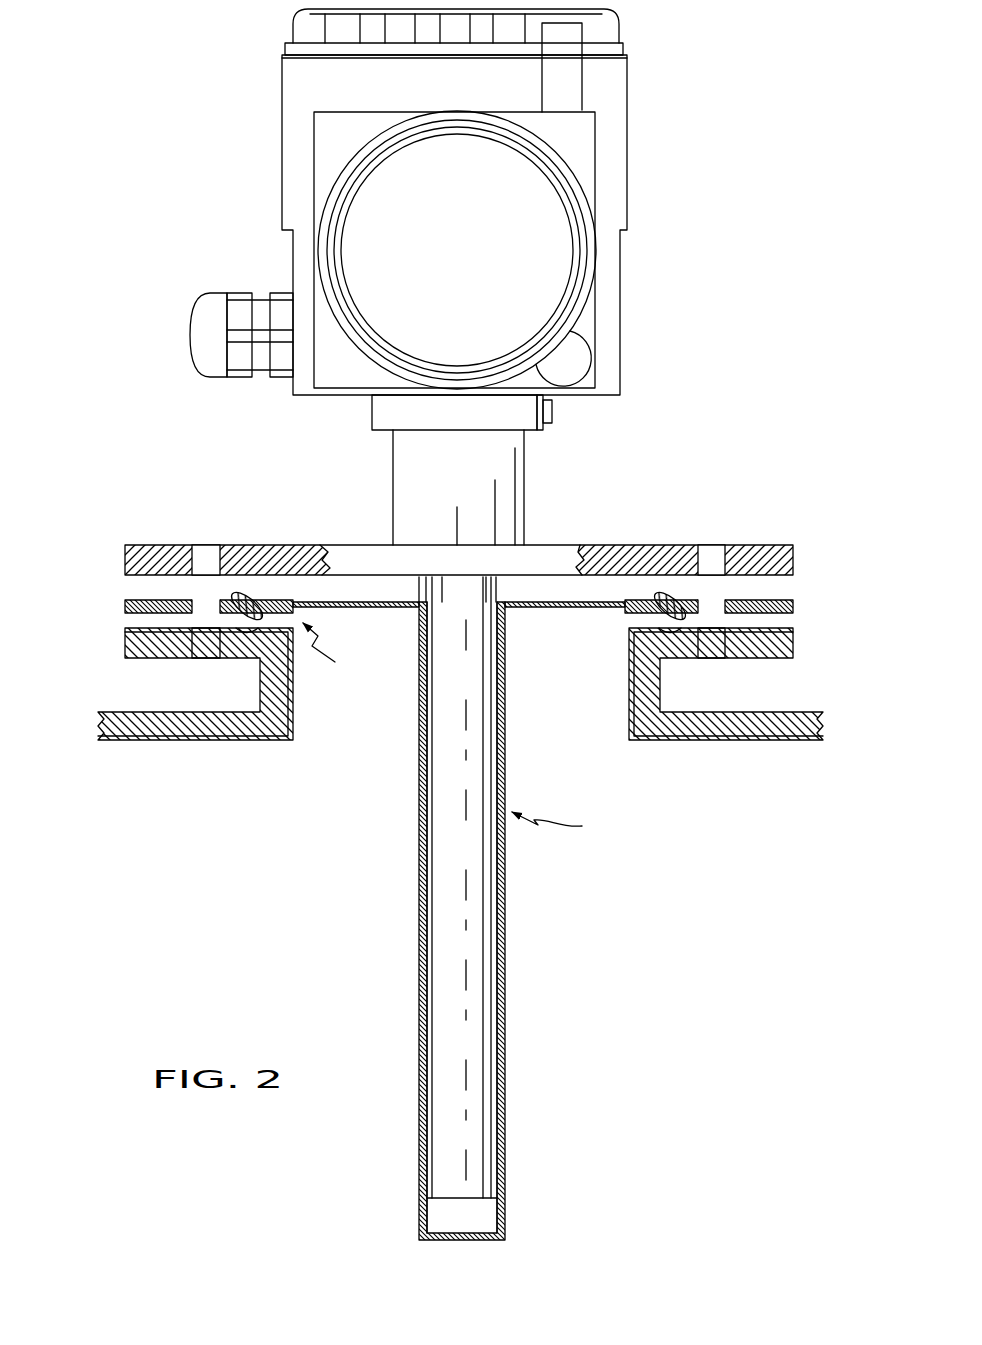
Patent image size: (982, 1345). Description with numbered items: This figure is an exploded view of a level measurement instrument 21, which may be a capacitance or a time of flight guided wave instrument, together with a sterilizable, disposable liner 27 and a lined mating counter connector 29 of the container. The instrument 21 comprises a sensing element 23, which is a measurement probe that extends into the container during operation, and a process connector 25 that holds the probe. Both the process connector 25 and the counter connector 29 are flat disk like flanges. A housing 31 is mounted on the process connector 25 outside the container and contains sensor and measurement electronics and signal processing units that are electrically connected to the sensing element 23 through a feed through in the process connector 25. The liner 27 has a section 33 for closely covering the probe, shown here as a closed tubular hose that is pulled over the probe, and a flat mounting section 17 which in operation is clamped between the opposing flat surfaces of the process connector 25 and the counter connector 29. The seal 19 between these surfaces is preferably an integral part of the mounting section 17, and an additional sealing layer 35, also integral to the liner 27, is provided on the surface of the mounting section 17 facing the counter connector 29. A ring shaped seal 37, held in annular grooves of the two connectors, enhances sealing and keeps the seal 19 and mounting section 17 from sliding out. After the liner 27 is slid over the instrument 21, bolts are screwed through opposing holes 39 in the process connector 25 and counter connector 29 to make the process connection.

The flat mounting section 17 is at (780, 598).
The seal 19 is at (343, 654).
The level measurement instrument 21 is at (216, 424).
The sensing element 23 is at (478, 918).
The process connector 25 is at (149, 548).
The sterilizable, disposable liner 27 is at (563, 826).
The lined mating counter connector 29 is at (135, 647).
The housing 31 is at (298, 145).
The section for closely covering the probe 33 is at (422, 918).
The sealing layer 35 is at (125, 606).
The ring shaped seal 37 is at (673, 597).
The holes 39 is at (205, 548).